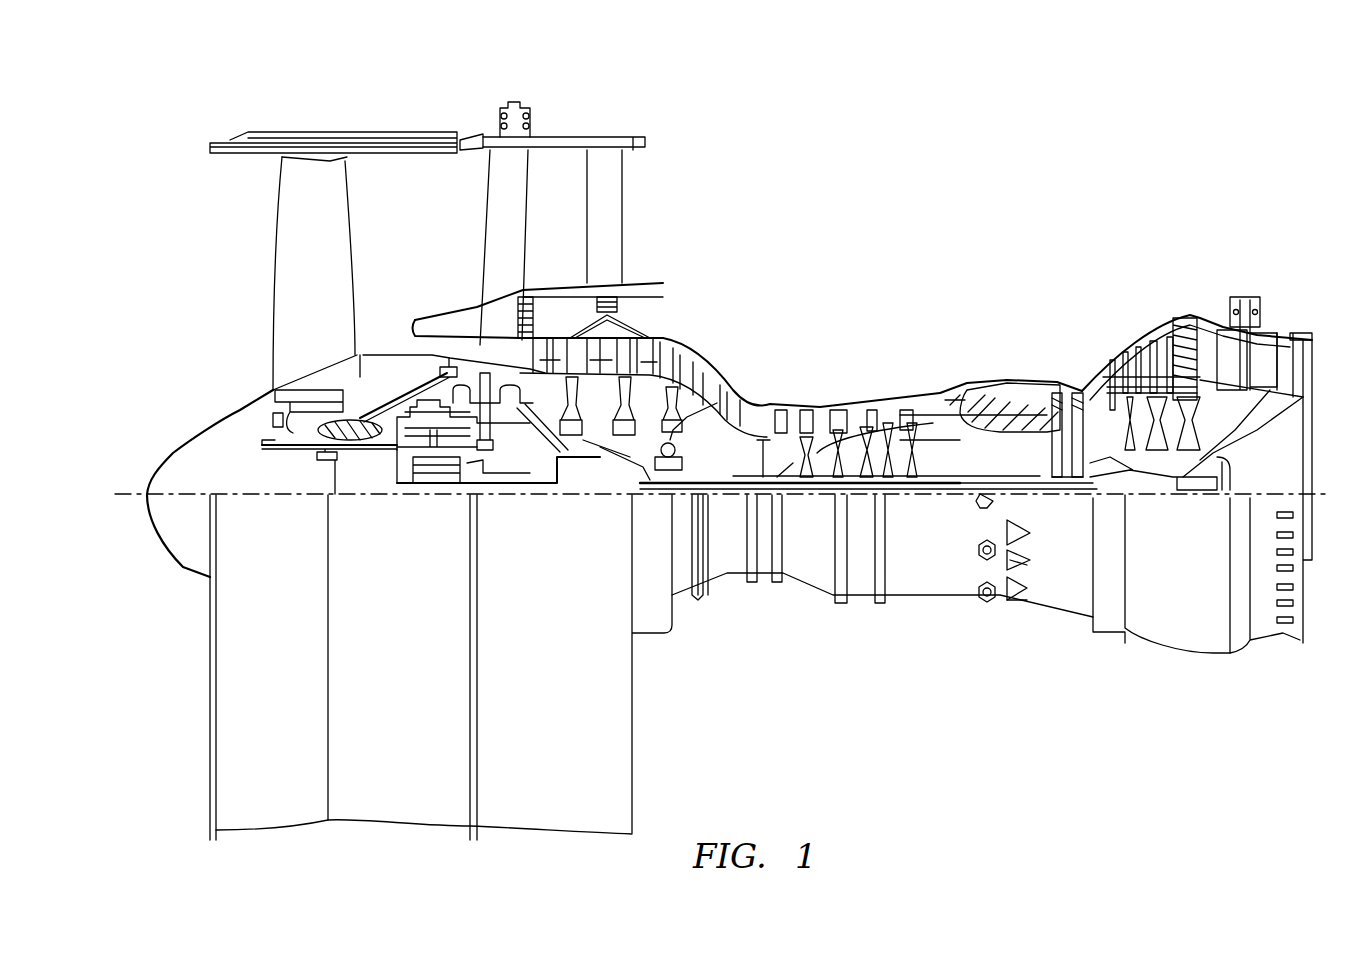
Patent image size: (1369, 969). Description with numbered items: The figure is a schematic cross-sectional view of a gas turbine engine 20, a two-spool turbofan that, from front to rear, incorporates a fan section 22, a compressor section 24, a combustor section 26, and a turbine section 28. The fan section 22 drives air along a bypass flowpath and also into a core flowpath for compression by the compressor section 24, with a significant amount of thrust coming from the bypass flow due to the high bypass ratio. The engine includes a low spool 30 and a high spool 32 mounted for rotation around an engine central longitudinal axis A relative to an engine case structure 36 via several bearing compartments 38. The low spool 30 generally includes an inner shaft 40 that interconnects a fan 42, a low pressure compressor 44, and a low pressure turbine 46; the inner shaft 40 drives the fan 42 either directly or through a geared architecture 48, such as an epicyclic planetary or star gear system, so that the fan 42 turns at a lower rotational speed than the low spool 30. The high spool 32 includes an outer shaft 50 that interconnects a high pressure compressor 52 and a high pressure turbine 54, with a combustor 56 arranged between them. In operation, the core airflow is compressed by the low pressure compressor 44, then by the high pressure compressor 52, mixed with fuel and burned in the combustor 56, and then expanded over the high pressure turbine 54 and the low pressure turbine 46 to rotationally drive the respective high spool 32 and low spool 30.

The gas turbine engine 20 is at (1169, 184).
The fan section 22 is at (208, 110).
The compressor section 24 is at (490, 262).
The combustor section 26 is at (960, 262).
The turbine section 28 is at (1245, 262).
The low spool 30 is at (728, 440).
The high spool 32 is at (935, 430).
The engine case structure 36 is at (857, 600).
The bearing compartments 38 is at (505, 567).
The inner shaft 40 is at (1043, 482).
The fan 42 is at (258, 257).
The low pressure compressor 44 is at (649, 359).
The low pressure turbine 46 is at (1190, 323).
The geared architecture 48 is at (433, 486).
The outer shaft 50 is at (1078, 472).
The high pressure compressor 52 is at (790, 412).
The high pressure turbine 54 is at (1066, 403).
The combustor 56 is at (1005, 405).
The engine central longitudinal axis A is at (1322, 494).